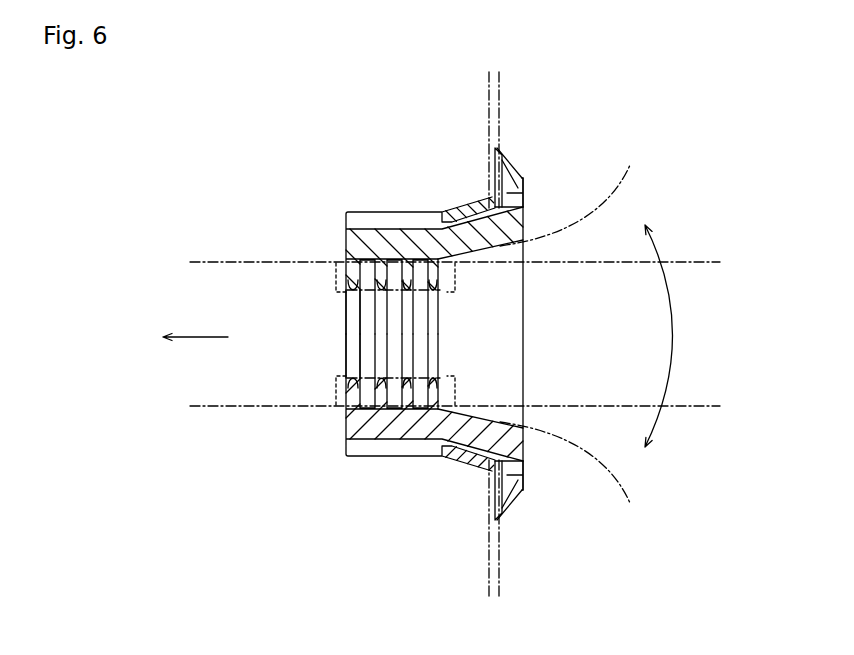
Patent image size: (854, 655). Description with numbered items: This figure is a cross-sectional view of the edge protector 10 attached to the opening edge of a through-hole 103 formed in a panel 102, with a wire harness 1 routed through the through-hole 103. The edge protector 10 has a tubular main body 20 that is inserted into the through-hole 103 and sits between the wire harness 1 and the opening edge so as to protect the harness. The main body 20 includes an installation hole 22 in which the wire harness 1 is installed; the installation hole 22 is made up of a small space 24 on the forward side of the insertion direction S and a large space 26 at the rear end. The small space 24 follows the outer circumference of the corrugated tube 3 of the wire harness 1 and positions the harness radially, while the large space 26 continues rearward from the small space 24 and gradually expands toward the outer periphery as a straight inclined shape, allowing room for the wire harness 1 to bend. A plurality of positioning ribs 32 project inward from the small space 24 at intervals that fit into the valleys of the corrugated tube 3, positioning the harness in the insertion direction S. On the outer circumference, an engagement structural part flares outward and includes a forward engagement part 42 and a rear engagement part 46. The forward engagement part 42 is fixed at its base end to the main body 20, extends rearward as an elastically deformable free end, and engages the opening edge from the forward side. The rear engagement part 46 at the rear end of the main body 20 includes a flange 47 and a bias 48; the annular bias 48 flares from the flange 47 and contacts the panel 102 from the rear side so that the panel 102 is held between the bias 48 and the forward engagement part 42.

The wire harness 1 is at (216, 418).
The corrugated tube 3 is at (328, 408).
The edge protector 10 is at (422, 336).
The main body 20 is at (339, 205).
The installation hole 22 is at (508, 296).
The small space 24 is at (365, 266).
The large space 26 is at (492, 413).
The positioning rib 32 is at (411, 370).
The forward engagement part 42 is at (468, 204).
The rear engagement part 46 is at (536, 174).
The flange 47 is at (521, 172).
The bias 48 is at (498, 121).
The panel 102 is at (488, 82).
The through-hole 103 is at (527, 210).
The insertion direction S is at (195, 322).